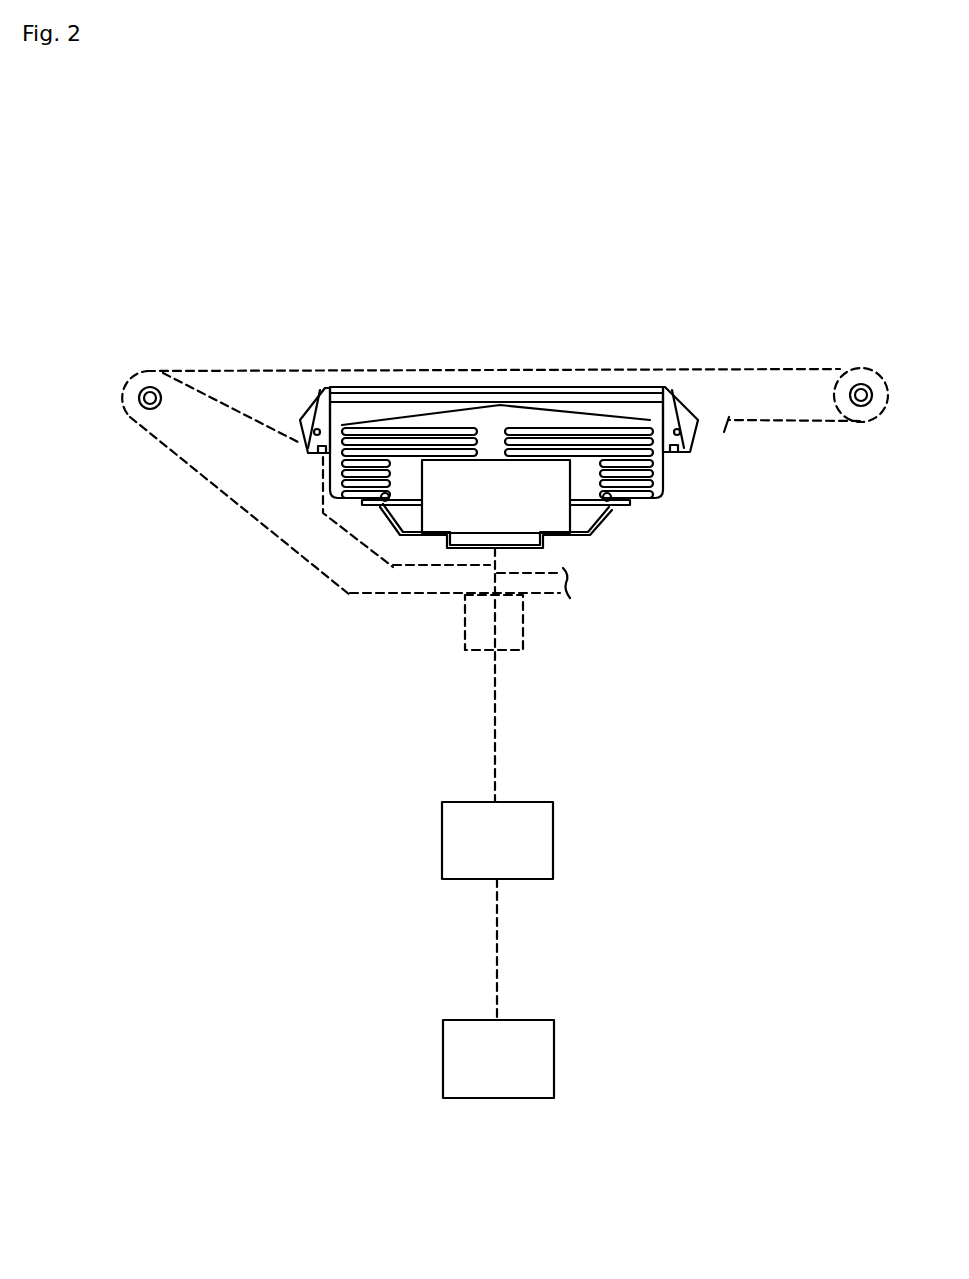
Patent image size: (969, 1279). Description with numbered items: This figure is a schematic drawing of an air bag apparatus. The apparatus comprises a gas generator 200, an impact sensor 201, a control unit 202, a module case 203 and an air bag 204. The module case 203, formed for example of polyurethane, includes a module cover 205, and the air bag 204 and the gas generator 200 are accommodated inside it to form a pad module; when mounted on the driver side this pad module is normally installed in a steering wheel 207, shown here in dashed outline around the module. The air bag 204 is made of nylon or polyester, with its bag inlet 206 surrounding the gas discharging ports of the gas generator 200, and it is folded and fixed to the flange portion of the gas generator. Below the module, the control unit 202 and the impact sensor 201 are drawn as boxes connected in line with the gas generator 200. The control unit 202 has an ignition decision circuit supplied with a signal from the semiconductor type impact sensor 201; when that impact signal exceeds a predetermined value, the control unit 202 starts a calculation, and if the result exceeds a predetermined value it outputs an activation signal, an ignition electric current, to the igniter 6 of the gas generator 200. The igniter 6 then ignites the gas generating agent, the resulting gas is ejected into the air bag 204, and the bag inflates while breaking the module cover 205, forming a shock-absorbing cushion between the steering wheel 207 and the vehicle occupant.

The igniter 6 is at (462, 550).
The gas generator 200 is at (541, 642).
The impact sensor 201 is at (443, 1066).
The control unit 202 is at (442, 843).
The module case 203 is at (615, 387).
The air bag 204 is at (367, 417).
The module cover 205 is at (485, 392).
The bag inlet 206 is at (637, 480).
The steering wheel 207 is at (733, 367).